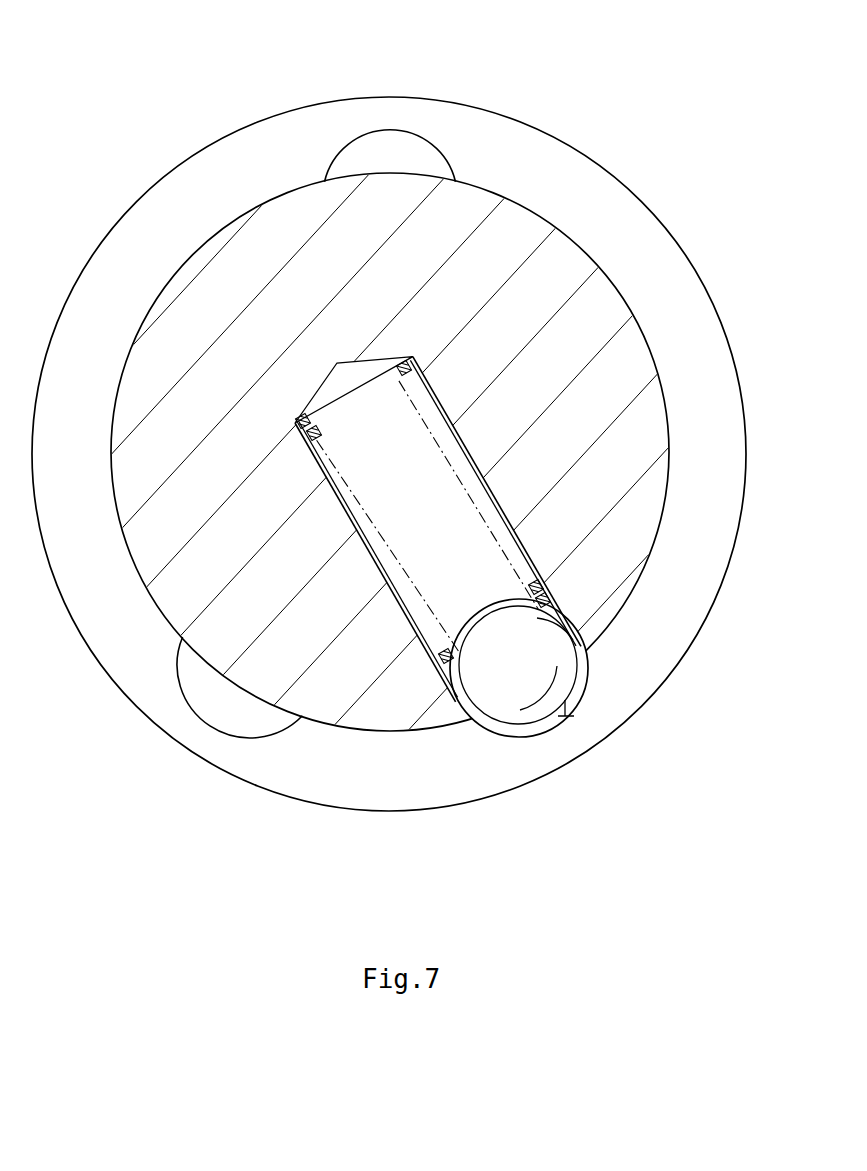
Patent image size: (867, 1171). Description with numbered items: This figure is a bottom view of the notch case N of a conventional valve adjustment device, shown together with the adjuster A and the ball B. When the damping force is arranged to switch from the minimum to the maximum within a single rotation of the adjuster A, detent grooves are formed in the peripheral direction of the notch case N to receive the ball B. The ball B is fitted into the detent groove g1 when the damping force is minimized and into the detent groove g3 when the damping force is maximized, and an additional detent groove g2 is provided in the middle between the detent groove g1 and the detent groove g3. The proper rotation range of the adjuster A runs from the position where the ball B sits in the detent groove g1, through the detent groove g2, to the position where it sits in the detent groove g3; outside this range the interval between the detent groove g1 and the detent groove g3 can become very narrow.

The notch case N is at (647, 230).
The adjuster A is at (617, 377).
The ball B is at (508, 723).
The detent groove g1 is at (242, 734).
The detent groove g2 is at (423, 136).
The detent groove g3 is at (577, 712).